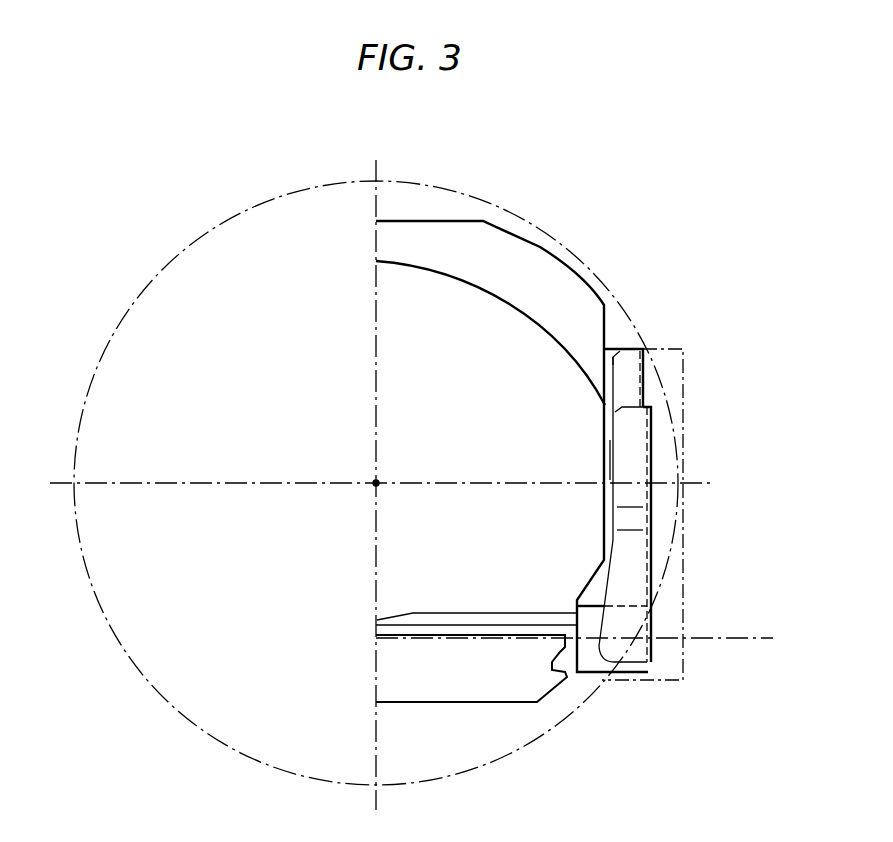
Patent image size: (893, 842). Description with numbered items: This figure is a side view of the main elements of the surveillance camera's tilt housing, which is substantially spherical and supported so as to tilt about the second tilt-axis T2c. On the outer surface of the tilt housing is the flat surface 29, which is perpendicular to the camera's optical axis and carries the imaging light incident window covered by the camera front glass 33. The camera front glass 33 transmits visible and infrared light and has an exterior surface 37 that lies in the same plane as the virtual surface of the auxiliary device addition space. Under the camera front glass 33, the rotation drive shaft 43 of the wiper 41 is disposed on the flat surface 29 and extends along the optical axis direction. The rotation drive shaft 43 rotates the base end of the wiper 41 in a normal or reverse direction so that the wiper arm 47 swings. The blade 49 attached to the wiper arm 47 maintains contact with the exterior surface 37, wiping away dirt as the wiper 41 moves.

The flat surface 29 is at (606, 322).
The blade 49 is at (641, 367).
The camera front glass 33 is at (608, 383).
The wiper 41 is at (653, 431).
The exterior surface 37 is at (611, 460).
The wiper arm 47 is at (653, 510).
The rotation drive shaft 43 is at (737, 640).
The second tilt-axis T2c is at (376, 481).